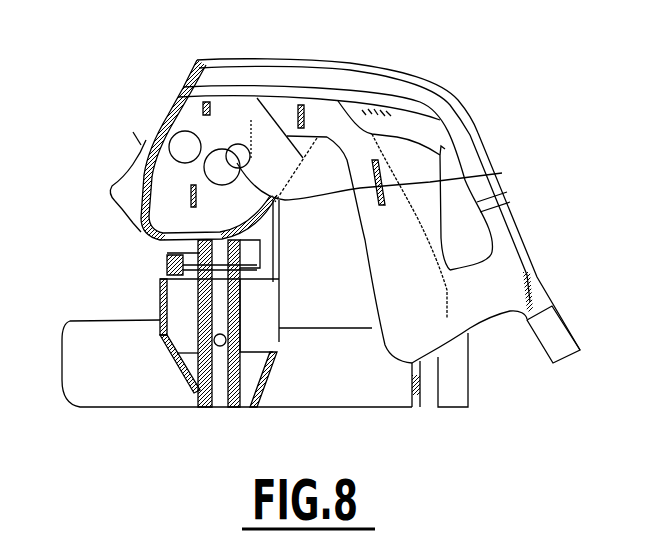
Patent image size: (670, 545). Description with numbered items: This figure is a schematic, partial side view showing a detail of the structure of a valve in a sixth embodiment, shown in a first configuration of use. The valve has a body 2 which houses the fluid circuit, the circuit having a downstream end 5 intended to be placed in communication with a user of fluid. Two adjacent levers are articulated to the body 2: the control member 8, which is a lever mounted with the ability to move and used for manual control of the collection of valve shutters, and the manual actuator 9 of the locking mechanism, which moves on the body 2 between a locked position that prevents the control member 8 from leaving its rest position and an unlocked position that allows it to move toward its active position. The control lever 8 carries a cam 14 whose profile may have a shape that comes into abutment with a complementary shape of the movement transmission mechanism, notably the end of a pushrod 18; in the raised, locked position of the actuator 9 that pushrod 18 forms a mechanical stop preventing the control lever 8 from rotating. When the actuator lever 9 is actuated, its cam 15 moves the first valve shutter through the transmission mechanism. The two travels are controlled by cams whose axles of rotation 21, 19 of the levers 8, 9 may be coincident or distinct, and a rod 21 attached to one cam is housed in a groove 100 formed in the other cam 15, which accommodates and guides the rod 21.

The body 2 is at (303, 378).
The downstream end 5 is at (420, 407).
The control member 8 is at (478, 133).
The manual actuator 9 is at (565, 328).
The cam of the control lever 14 is at (146, 146).
The cam 15 is at (147, 233).
The pushrod 18 is at (200, 240).
The axle of rotation 19 is at (180, 133).
The rod 21 is at (221, 176).
The groove 100 is at (502, 173).